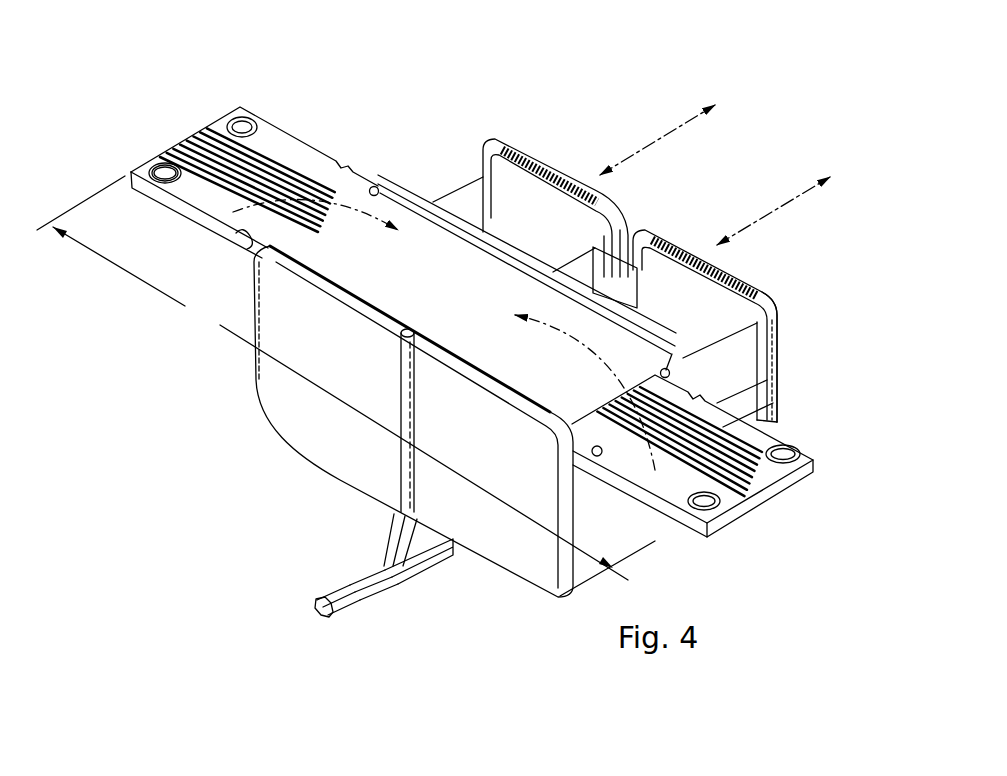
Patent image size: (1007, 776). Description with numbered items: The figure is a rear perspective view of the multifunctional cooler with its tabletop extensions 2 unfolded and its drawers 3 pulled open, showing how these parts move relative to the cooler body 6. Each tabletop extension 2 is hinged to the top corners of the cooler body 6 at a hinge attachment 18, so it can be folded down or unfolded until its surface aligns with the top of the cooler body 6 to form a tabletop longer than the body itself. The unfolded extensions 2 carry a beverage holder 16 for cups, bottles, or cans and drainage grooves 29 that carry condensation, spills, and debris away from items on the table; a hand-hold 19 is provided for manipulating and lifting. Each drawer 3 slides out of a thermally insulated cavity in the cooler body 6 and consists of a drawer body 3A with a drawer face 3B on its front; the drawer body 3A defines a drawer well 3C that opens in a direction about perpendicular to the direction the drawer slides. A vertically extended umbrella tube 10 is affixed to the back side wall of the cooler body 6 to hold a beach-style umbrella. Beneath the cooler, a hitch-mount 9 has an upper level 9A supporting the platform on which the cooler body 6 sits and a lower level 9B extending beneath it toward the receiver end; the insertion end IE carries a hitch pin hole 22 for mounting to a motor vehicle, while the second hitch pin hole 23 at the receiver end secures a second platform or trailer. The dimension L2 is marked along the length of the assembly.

The tabletop extension 2 is at (280, 152).
The drawer 3 is at (610, 246).
The drawer body 3A is at (429, 192).
The drawer face 3B is at (542, 170).
The drawer well 3C is at (493, 219).
The cooler body 6 is at (273, 403).
The hitch-mount 9 is at (375, 629).
The upper level 9A is at (400, 519).
The lower level 9B is at (450, 547).
The umbrella tube 10 is at (393, 460).
The beverage holder 16 is at (152, 162).
The hinge attachment 18 is at (376, 187).
The hand-hold 19 is at (742, 274).
The hitch pin hole 22 is at (345, 603).
The hitch pin hole 23 is at (430, 555).
The drainage grooves 29 is at (195, 131).
The insertion end IE is at (323, 617).
The length L2 is at (332, 378).